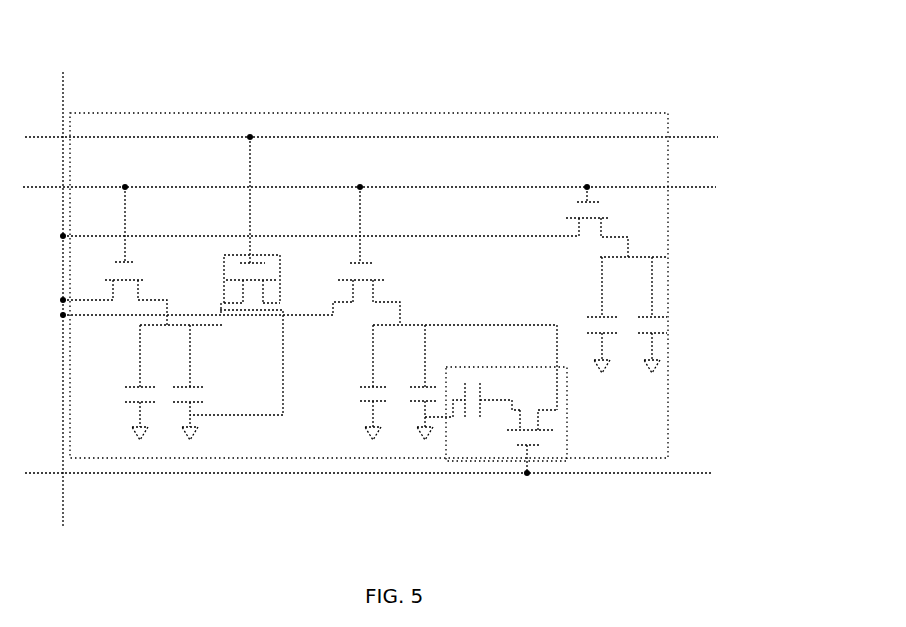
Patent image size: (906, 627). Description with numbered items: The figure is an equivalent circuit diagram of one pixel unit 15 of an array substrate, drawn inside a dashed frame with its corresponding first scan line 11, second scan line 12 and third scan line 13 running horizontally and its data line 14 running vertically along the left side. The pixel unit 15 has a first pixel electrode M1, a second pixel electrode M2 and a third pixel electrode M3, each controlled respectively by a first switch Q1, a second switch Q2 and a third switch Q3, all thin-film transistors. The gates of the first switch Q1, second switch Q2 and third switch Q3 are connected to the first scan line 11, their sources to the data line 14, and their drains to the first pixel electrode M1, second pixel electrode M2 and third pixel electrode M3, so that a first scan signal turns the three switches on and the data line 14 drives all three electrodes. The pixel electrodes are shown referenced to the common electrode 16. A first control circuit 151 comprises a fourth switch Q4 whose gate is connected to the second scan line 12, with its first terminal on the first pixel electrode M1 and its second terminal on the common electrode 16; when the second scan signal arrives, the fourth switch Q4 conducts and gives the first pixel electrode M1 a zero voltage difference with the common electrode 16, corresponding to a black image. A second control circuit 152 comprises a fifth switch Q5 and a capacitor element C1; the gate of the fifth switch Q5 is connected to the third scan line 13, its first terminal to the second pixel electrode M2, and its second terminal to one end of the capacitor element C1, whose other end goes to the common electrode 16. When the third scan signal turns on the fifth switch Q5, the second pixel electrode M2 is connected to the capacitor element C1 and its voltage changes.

The first scan line 11 is at (697, 187).
The second scan line 12 is at (697, 137).
The third scan line 13 is at (690, 473).
The data line 14 is at (63, 72).
The pixel unit 15 is at (563, 113).
The first control circuit 151 is at (328, 250).
The second control circuit 152 is at (576, 420).
The common electrode 16 is at (192, 440).
The first switch Q1 is at (136, 256).
The second switch Q2 is at (372, 256).
The third switch Q3 is at (598, 222).
The fourth switch Q4 is at (250, 276).
The fifth switch Q5 is at (521, 441).
The first pixel electrode M1 is at (174, 363).
The second pixel electrode M2 is at (458, 358).
The third pixel electrode M3 is at (627, 287).
The capacitor element C1 is at (472, 395).